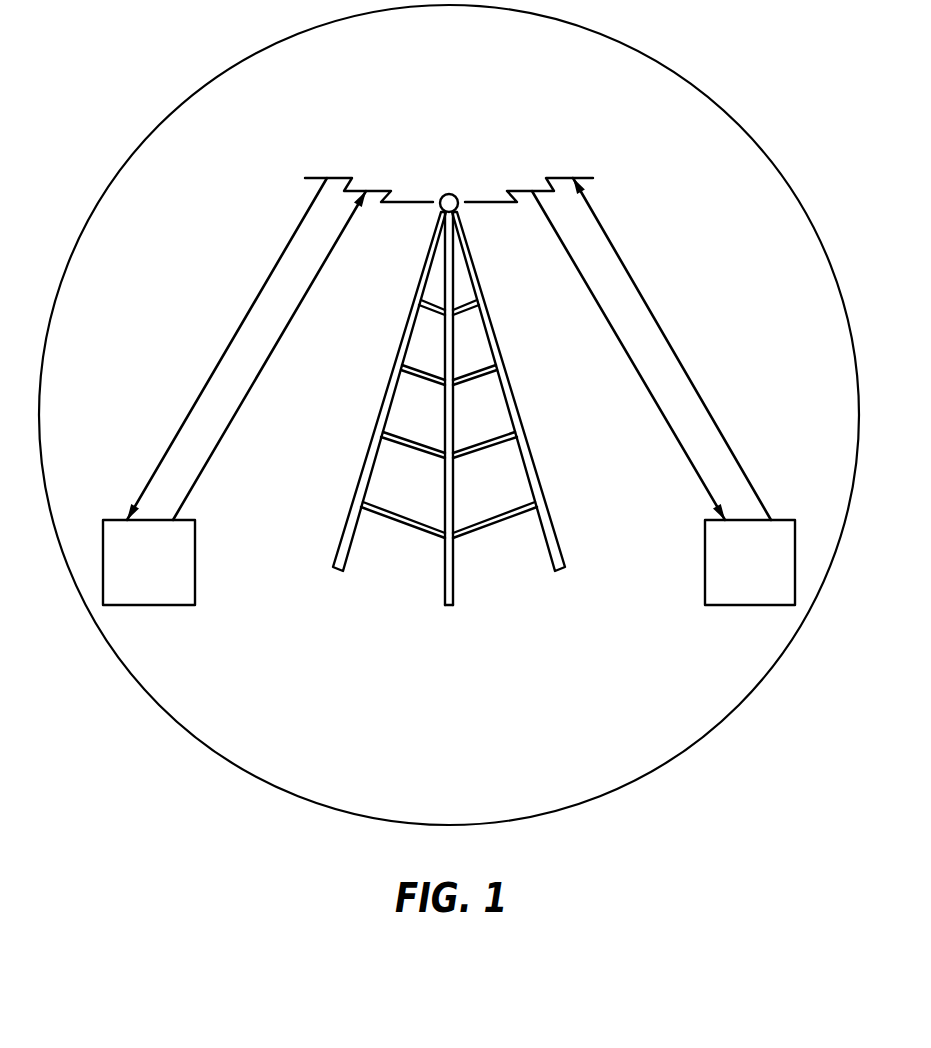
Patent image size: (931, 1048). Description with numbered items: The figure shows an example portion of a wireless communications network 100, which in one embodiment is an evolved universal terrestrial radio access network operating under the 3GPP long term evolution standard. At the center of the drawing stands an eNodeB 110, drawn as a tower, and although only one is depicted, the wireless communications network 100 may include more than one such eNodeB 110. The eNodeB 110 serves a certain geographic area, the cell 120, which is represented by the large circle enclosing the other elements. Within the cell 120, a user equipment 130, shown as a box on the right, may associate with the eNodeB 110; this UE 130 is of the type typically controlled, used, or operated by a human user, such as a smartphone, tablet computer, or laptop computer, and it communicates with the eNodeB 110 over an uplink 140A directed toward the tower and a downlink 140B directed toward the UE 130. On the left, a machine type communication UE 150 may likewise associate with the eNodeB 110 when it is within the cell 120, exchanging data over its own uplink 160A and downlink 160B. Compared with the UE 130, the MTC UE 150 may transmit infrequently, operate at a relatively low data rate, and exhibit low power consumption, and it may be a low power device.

The wireless communications network 100 is at (150, 44).
The eNodeB 110 is at (493, 328).
The cell 120 is at (763, 150).
The user equipment 130 is at (705, 560).
The uplink 140A is at (671, 348).
The downlink 140B is at (629, 357).
The machine type communication UE 150 is at (195, 558).
The uplink 160A is at (271, 357).
The downlink 160B is at (228, 348).